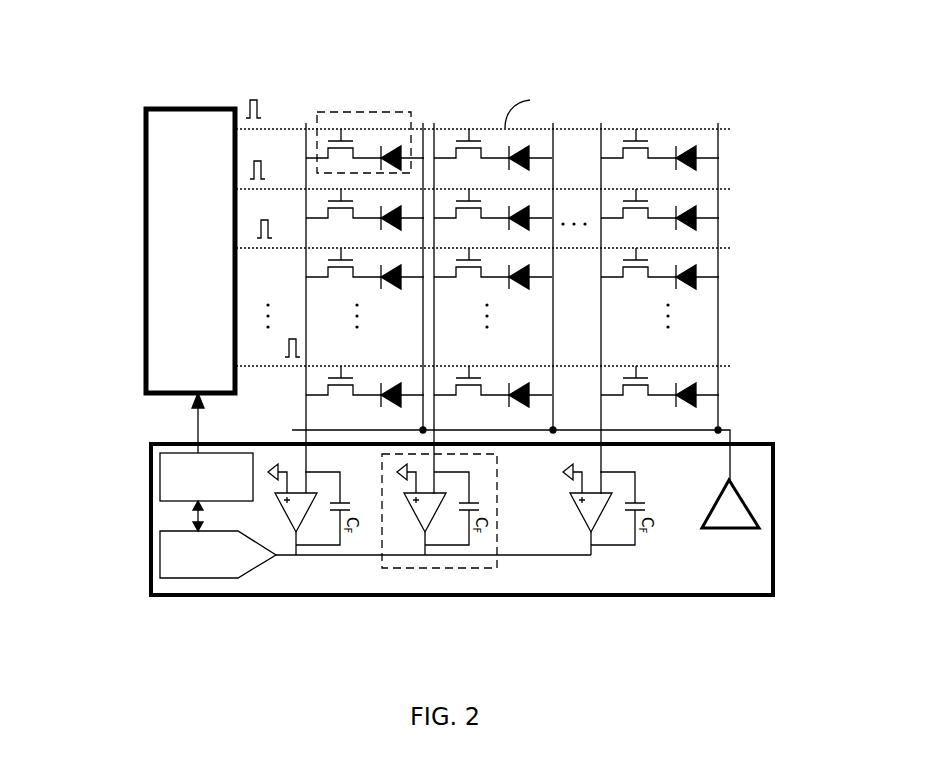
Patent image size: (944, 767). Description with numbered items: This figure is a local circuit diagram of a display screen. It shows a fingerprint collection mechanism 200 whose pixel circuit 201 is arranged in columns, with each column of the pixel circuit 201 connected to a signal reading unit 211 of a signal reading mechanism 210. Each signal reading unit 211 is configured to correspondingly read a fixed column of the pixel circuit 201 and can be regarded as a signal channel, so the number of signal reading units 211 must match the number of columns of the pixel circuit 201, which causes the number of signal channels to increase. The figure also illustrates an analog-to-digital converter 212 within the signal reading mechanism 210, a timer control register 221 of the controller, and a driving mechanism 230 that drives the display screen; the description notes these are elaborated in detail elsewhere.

The fingerprint collection mechanism 200 is at (700, 317).
The pixel circuit 201 is at (361, 123).
The driving mechanism 230 is at (158, 329).
The signal reading mechanism 210 is at (677, 578).
The signal reading unit 211 is at (397, 570).
The timer control register 221 is at (165, 463).
The analog-to-digital converter (ADC) 212 is at (162, 553).